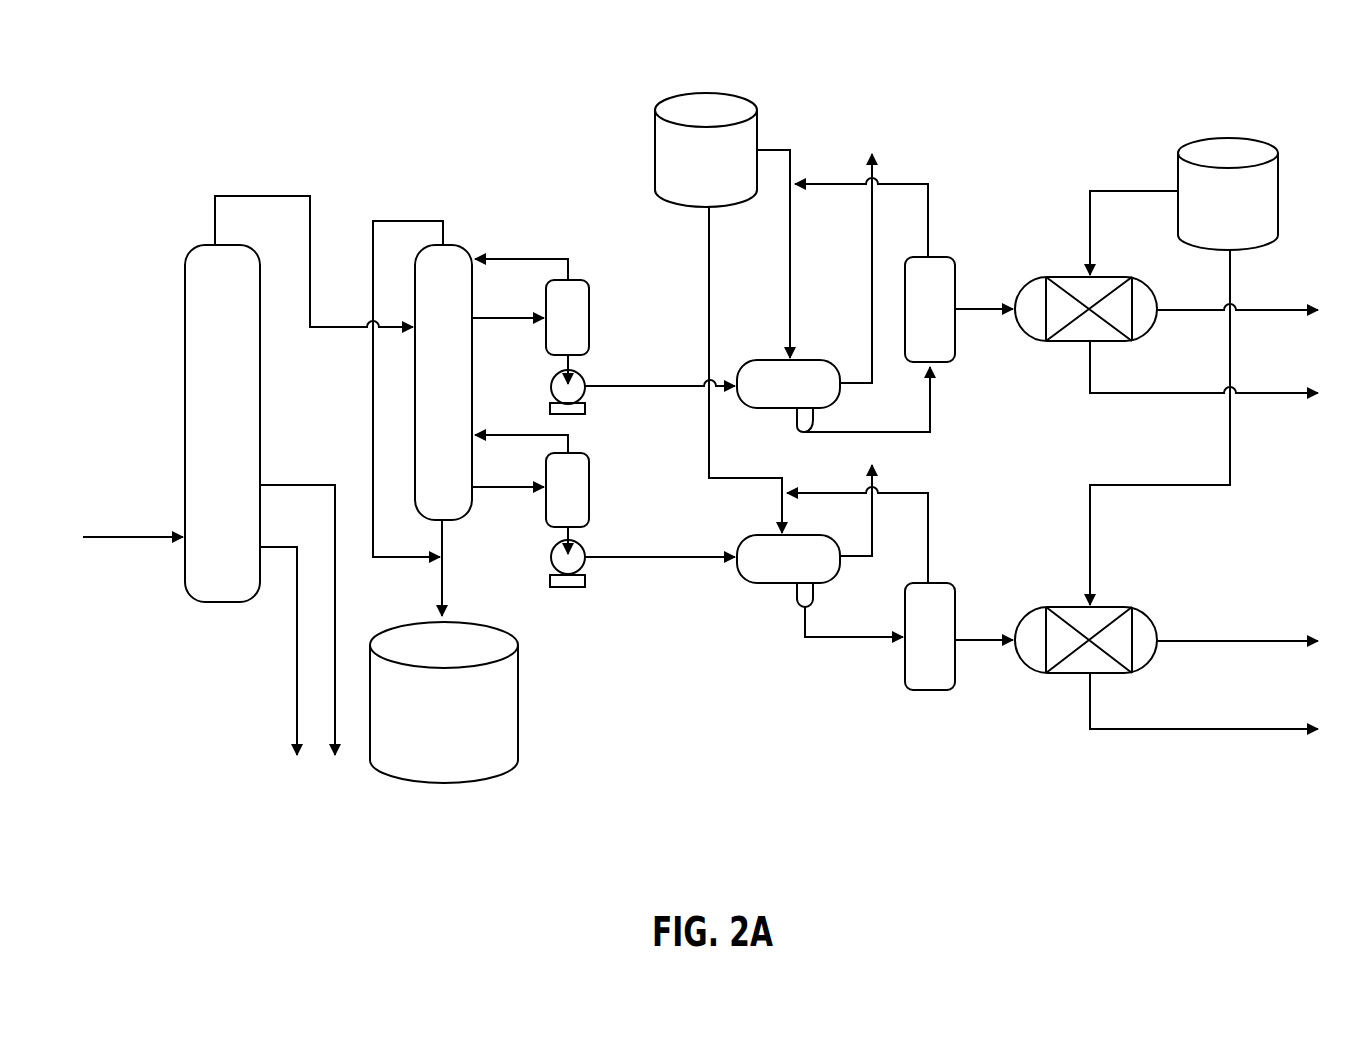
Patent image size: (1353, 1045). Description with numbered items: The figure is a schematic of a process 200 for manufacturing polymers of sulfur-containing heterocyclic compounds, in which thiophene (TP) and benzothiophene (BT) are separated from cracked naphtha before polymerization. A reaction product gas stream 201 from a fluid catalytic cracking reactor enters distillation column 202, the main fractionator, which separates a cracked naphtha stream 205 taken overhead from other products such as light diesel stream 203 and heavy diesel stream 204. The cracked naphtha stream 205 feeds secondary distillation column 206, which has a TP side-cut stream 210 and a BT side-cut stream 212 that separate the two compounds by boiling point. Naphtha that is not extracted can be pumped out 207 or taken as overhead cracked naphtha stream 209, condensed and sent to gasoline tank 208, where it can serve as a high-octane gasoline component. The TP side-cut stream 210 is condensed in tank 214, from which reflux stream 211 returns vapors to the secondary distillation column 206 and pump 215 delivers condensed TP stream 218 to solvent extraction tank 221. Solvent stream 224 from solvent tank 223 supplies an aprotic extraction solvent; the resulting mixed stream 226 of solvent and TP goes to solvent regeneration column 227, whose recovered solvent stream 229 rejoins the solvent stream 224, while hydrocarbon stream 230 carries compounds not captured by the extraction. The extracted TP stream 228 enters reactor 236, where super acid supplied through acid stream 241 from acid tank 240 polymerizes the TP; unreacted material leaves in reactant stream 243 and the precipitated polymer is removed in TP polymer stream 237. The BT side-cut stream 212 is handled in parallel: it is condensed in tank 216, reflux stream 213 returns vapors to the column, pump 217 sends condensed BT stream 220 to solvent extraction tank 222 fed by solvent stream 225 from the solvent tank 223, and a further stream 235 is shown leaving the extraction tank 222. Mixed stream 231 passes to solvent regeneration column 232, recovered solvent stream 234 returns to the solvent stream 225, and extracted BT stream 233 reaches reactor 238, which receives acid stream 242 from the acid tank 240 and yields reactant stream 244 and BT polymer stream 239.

The process 200 is at (1147, 90).
The reaction product gas stream 201 is at (133, 526).
The distillation column 202 is at (222, 423).
The light diesel stream 203 is at (309, 620).
The heavy diesel stream 204 is at (290, 651).
The cracked naphtha stream 205 is at (314, 261).
The secondary distillation column 206 is at (443, 382).
The pump-out 207 is at (453, 568).
The gasoline tank 208 is at (444, 702).
The overhead cracked naphtha stream 209 is at (408, 389).
The TP side-cut stream 210 is at (508, 308).
The reflux stream 211 is at (521, 258).
The BT side-cut stream 212 is at (508, 475).
The reflux stream 213 is at (521, 432).
The tank 214 is at (589, 288).
The pump 215 is at (579, 374).
The tank 216 is at (589, 465).
The pump 217 is at (579, 545).
The condensed TP stream 218 is at (660, 374).
The condensed BT stream 220 is at (660, 545).
The solvent extraction tank 221 is at (788, 396).
The solvent extraction tank 222 is at (788, 571).
The solvent tank 223 is at (706, 150).
The solvent stream 224 is at (785, 254).
The solvent stream 225 is at (745, 370).
The mixed stream 226 is at (863, 399).
The solvent regeneration column 227 is at (930, 309).
The extracted TP stream 228 is at (984, 298).
The recovered solvent stream 229 is at (861, 209).
The hydrocarbon stream 230 is at (867, 268).
The mixed stream 231 is at (854, 622).
The solvent regeneration column 232 is at (930, 636).
The extracted BT stream 233 is at (984, 627).
The recovered solvent stream 234 is at (857, 526).
The raffinate stream 235 is at (867, 510).
The reactor 236 is at (1060, 341).
The TP polymer stream 237 is at (1204, 367).
The reactor 238 is at (1060, 673).
The BT polymer stream 239 is at (1204, 701).
The acid tank 240 is at (1228, 194).
The acid stream 241 is at (1126, 222).
The acid stream 242 is at (1160, 427).
The reactant stream 243 is at (1237, 298).
The reactant stream 244 is at (1237, 630).